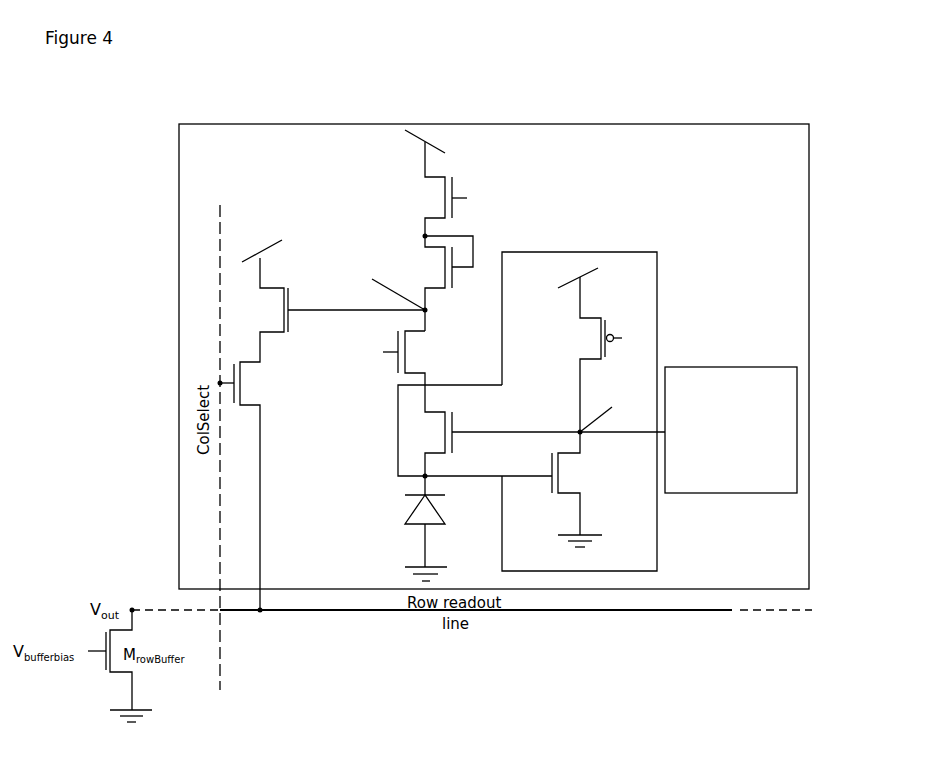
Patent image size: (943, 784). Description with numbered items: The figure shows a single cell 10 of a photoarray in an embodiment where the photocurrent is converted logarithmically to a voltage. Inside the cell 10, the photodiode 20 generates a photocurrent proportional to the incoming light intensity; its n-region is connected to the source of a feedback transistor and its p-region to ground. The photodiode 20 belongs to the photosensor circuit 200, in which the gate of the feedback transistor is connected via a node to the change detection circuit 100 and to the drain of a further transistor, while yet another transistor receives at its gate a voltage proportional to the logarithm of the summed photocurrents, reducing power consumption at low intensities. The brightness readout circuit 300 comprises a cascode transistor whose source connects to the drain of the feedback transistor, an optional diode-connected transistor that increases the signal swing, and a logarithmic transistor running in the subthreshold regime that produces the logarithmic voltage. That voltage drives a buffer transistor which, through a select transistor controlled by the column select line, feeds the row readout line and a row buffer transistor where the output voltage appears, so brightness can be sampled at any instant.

The cell 10 is at (763, 159).
The photodiode 20 is at (420, 512).
The change detection circuit 100 is at (728, 426).
The photosensor circuit 200 is at (560, 244).
The brightness readout circuit 300 is at (333, 205).